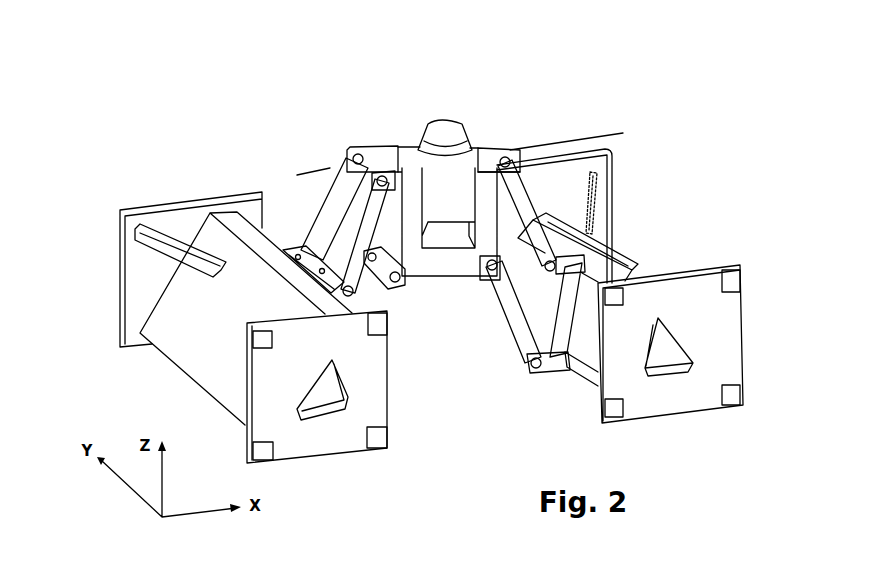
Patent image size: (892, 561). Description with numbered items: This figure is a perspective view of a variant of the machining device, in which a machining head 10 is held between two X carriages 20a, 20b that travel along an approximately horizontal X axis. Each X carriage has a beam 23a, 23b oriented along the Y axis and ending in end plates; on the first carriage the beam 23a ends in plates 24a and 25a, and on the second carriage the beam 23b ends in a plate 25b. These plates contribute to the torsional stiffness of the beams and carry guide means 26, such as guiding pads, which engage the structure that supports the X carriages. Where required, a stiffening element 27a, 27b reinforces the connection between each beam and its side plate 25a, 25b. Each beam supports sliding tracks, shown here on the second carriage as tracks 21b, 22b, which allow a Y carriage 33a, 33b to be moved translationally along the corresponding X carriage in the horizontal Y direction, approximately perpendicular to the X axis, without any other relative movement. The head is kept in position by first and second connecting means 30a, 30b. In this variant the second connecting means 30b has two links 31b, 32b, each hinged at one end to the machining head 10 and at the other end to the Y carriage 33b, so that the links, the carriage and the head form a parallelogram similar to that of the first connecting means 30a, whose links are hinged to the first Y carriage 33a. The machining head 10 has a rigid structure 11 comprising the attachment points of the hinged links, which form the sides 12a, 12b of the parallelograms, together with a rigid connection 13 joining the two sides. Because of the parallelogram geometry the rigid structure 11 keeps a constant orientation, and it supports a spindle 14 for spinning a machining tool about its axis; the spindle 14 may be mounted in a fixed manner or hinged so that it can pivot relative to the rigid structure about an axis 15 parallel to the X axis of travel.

The machining head 10 is at (459, 106).
The rigid structure 11 is at (452, 293).
The side of parallelogram 12a is at (406, 182).
The side of parallelogram 12b is at (533, 193).
The rigid connection 13 is at (427, 272).
The spindle 14 is at (430, 122).
The axis 15 is at (578, 139).
The first X carriage 20a is at (129, 198).
The second X carriage 20b is at (646, 126).
The sliding track 21b is at (603, 247).
The sliding track 22b is at (583, 380).
The beam 23a is at (200, 362).
The beam 23b is at (623, 272).
The end plate 24a is at (317, 443).
The end plate 25a is at (140, 266).
The end plate 25b is at (607, 165).
The guide means 26 is at (382, 437).
The stiffening element 27a is at (167, 253).
The stiffening element 27b is at (603, 184).
The first connecting means 30a is at (314, 178).
The second connecting means 30b is at (518, 391).
The link 31b is at (585, 222).
The link 32b is at (512, 318).
The first Y carriage 33a is at (291, 250).
The second Y carriage 33b is at (560, 373).